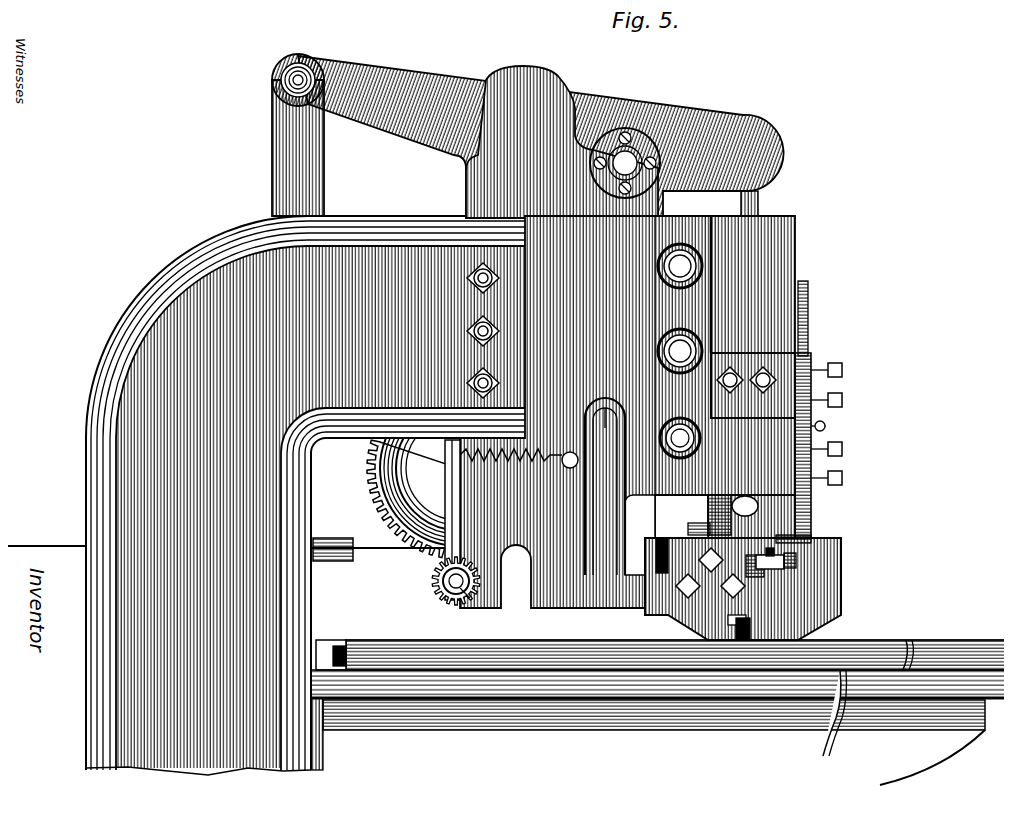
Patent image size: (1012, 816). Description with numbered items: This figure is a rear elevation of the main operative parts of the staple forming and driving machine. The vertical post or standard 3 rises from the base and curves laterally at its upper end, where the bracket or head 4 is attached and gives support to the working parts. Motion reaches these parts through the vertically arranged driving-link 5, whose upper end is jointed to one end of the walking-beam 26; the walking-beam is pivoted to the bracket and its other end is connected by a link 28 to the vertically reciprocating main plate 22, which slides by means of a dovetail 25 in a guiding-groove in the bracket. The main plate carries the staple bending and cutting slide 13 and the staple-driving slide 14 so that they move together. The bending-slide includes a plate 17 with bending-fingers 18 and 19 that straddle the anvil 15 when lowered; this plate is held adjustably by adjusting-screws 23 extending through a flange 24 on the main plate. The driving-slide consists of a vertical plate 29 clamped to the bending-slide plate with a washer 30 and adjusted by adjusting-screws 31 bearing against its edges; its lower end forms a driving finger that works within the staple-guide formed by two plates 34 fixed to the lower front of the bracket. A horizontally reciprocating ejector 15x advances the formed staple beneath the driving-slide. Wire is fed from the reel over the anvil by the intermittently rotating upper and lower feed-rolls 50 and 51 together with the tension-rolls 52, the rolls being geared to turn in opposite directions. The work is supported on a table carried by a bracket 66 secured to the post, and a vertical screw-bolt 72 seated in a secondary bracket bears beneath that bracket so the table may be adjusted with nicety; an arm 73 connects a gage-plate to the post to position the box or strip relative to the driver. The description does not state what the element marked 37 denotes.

The vertical post or standard 3 is at (80, 478).
The bracket or head 4 is at (520, 62).
The driving-link 5 is at (312, 180).
The walking-beam 26 is at (428, 60).
The link 28 is at (748, 200).
The upper feed-roll 50 is at (390, 510).
The lower feed-roll 51 is at (424, 584).
The tension-rolls 52 is at (460, 590).
The rod 37 is at (14, 536).
The screw-bolt 72 is at (555, 636).
The arm 73 is at (318, 632).
The bracket 66 is at (657, 712).
The vertical plate 29 is at (800, 512).
The adjusting-screws 31 is at (836, 411).
The adjusting-screws 23 is at (836, 440).
The flange 24 is at (822, 418).
The plate 17 is at (700, 490).
The bending-finger 19 is at (700, 518).
The dovetail 25 is at (748, 503).
The bending-finger 18 is at (760, 528).
The staple-guide plates 34 is at (668, 614).
The washer 30 is at (738, 556).
The anvil 15 is at (760, 562).
The ejector 15x is at (762, 550).
The staple bending and cutting slide 13 is at (782, 560).
The main plate 22 is at (803, 531).
The staple-driving slide 14 is at (741, 634).